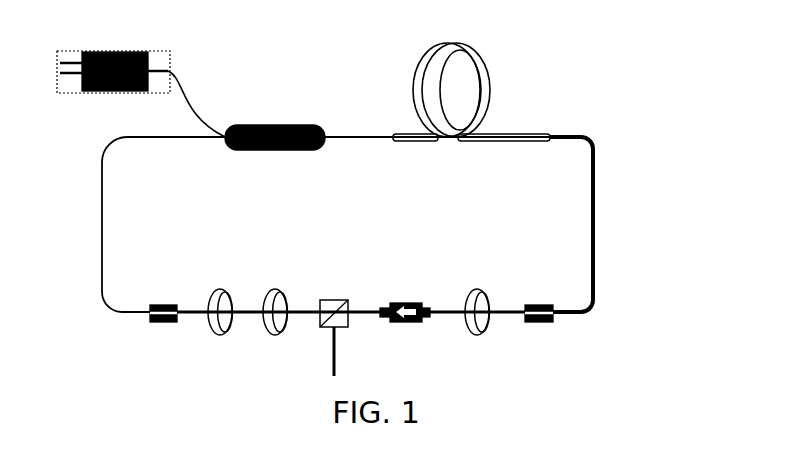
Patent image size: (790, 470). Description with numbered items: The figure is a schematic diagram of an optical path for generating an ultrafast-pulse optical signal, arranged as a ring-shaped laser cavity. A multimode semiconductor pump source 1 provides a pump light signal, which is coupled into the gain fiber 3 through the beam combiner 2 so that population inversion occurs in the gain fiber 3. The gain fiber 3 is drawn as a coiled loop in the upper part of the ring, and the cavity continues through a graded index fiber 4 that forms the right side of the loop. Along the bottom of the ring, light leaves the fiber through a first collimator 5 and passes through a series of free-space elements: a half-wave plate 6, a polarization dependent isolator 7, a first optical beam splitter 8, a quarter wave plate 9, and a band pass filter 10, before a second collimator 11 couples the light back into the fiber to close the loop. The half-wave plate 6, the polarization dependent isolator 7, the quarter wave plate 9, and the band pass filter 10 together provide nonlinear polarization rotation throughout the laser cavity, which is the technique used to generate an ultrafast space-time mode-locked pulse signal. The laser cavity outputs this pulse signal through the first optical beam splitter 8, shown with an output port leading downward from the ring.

The multimode semiconductor pump source 1 is at (120, 50).
The beam combiner 2 is at (278, 125).
The gain fiber 3 is at (493, 136).
The graded index fiber 4 is at (598, 205).
The first collimator 5 is at (528, 300).
The half-wave plate 6 is at (477, 290).
The polarization dependent isolator 7 is at (410, 302).
The first optical beam splitter 8 is at (343, 292).
The ¼ wave plate 9 is at (280, 287).
The band pass filter 10 is at (223, 290).
The second collimator 11 is at (152, 303).